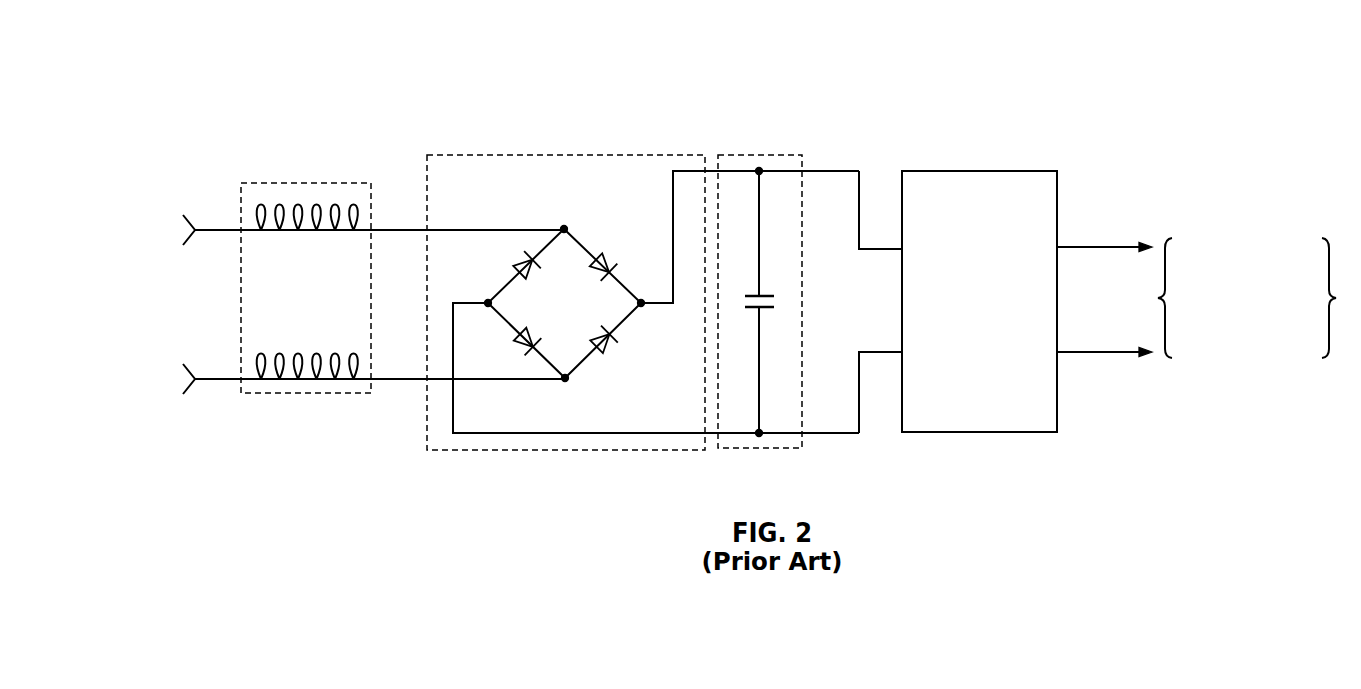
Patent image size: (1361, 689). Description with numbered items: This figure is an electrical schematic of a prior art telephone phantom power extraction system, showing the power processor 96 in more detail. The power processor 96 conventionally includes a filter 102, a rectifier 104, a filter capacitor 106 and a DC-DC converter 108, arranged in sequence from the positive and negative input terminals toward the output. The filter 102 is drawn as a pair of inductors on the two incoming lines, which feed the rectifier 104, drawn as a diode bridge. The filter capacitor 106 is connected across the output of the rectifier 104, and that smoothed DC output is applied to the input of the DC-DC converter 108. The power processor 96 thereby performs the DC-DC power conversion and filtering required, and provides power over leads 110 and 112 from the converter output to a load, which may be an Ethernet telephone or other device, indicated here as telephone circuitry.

The power processor 96 is at (203, 64).
The filter 102 is at (298, 183).
The rectifier 104 is at (483, 155).
The filter capacitor 106 is at (775, 155).
The DC-DC converter 108 is at (968, 171).
The lead 110 is at (1078, 248).
The lead 112 is at (1078, 352).